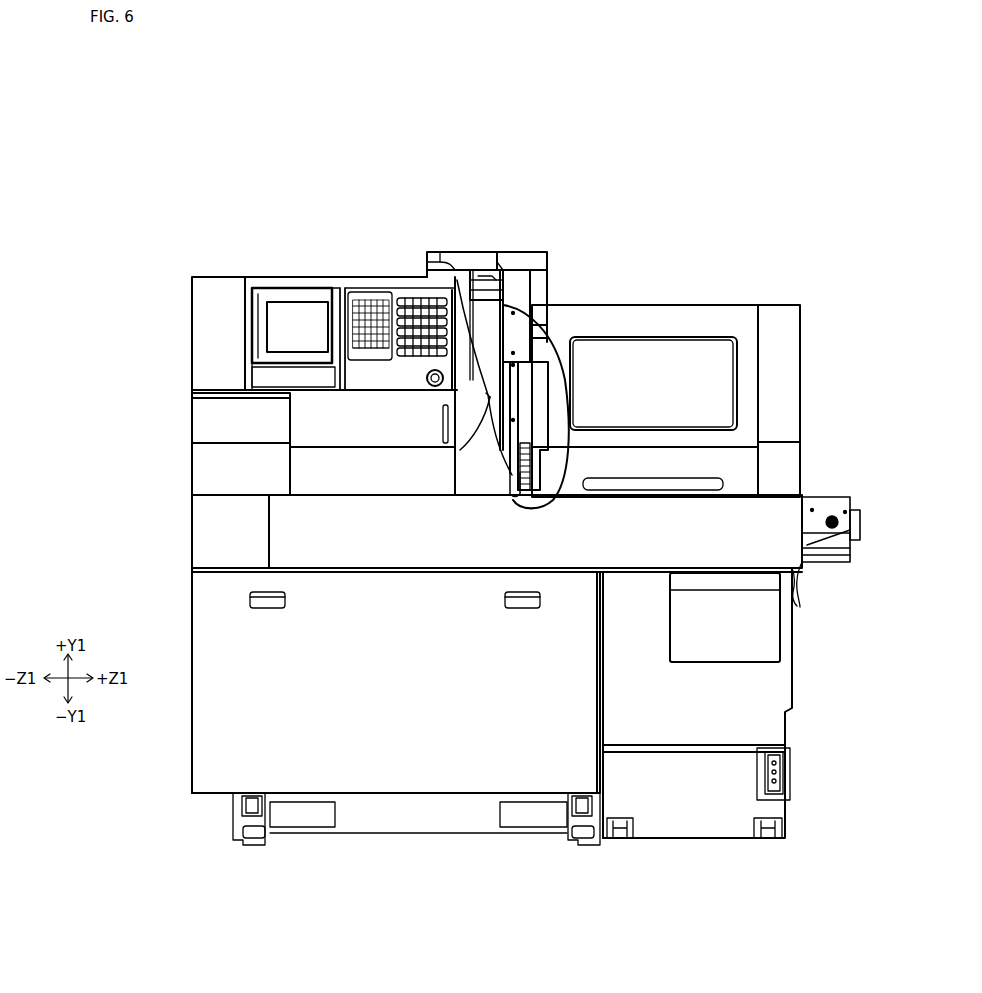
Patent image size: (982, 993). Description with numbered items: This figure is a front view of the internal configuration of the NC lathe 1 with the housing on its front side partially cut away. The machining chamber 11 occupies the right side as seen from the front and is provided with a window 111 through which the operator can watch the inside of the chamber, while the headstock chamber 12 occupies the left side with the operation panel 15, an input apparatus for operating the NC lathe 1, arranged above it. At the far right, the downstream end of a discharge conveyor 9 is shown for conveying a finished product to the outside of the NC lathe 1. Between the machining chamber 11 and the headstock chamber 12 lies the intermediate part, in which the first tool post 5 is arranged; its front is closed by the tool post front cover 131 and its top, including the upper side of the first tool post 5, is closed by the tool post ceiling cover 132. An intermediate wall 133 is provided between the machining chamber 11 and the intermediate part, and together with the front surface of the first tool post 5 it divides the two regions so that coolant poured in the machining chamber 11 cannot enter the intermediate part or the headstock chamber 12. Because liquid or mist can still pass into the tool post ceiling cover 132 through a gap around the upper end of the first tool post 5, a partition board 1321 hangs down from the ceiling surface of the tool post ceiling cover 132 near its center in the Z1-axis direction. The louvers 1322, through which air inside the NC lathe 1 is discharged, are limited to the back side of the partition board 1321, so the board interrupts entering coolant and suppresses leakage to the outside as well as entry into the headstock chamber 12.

The NC lathe 1 is at (806, 290).
The first tool post 5 is at (528, 303).
The discharge conveyor 9 is at (864, 522).
The machining chamber 11 is at (691, 310).
The headstock chamber 12 is at (298, 474).
The operation panel 15 is at (374, 297).
The window 111 is at (732, 388).
The tool post front cover 131 is at (457, 280).
The tool post ceiling cover 132 is at (468, 255).
The intermediate wall 133 is at (533, 353).
The partition board 1321 is at (497, 262).
The louvers 1322 is at (447, 252).